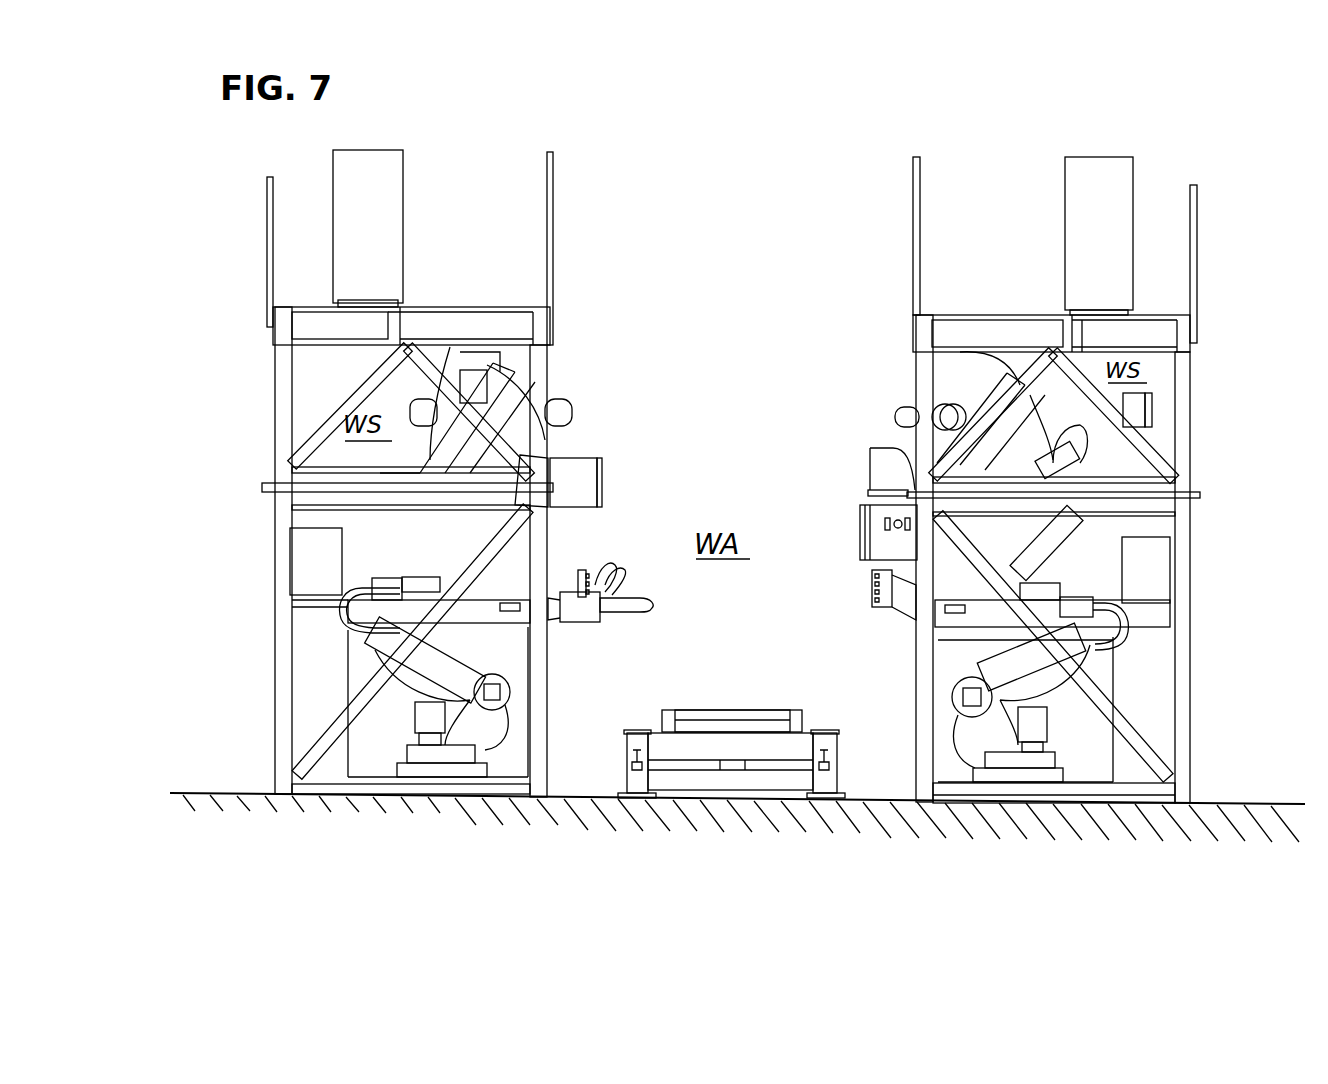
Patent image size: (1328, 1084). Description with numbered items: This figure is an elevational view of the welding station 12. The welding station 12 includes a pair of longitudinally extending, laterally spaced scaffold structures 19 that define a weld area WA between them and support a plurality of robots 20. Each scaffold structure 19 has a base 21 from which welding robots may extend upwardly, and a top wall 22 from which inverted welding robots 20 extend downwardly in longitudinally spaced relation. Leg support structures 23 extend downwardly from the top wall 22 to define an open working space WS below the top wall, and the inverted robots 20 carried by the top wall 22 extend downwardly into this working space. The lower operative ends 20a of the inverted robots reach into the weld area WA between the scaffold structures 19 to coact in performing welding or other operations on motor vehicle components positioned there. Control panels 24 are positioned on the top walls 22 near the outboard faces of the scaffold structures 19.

The welding station 12 is at (1220, 292).
The scaffold structure 19 is at (266, 547).
The robot 20 is at (954, 389).
The lower operative end 20a is at (560, 553).
The base 21 is at (1165, 791).
The top wall 22 is at (1000, 325).
The leg support structure 23 is at (1183, 382).
The control panel 24 is at (1100, 165).